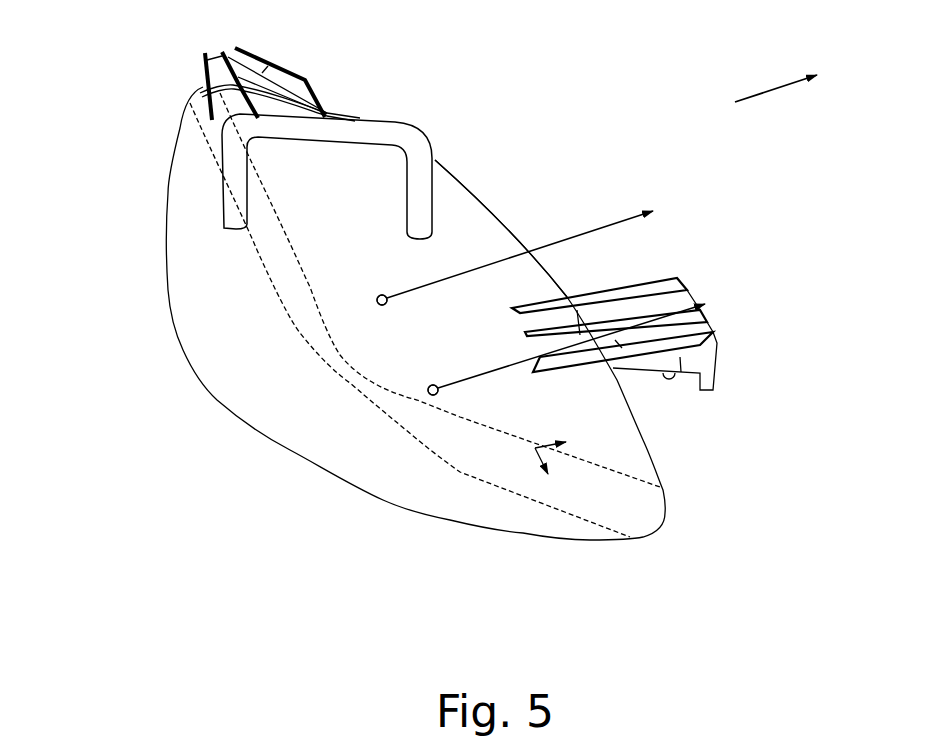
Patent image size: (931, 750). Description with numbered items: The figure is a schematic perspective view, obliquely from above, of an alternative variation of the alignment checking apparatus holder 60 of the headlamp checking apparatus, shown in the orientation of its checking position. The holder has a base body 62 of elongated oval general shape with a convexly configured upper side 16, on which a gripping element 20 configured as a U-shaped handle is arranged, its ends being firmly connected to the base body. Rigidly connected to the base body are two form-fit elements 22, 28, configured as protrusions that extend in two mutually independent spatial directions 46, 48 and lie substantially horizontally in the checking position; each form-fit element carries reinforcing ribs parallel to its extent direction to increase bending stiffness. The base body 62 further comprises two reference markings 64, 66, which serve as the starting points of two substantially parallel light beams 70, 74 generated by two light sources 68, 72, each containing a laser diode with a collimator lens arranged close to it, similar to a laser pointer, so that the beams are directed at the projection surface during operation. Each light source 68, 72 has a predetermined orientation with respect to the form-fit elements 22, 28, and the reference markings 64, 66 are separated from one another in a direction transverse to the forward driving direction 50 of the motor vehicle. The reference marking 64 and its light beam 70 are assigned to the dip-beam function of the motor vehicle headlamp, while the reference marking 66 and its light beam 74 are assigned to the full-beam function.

The upper side 16 is at (462, 210).
The gripping element 20 is at (377, 130).
The form-fit element 22 is at (692, 352).
The form-fit element 28 is at (258, 74).
The spatial direction 46 is at (561, 478).
The spatial direction 48 is at (575, 441).
The forward driving direction 50 is at (778, 92).
The alignment checking apparatus holder 60 is at (156, 195).
The base body 62 is at (318, 438).
The reference marking 64 is at (423, 397).
The reference marking 66 is at (377, 300).
The light source 68 is at (433, 390).
The light beam 70 is at (608, 325).
The light source 72 is at (382, 300).
The light beam 74 is at (588, 227).